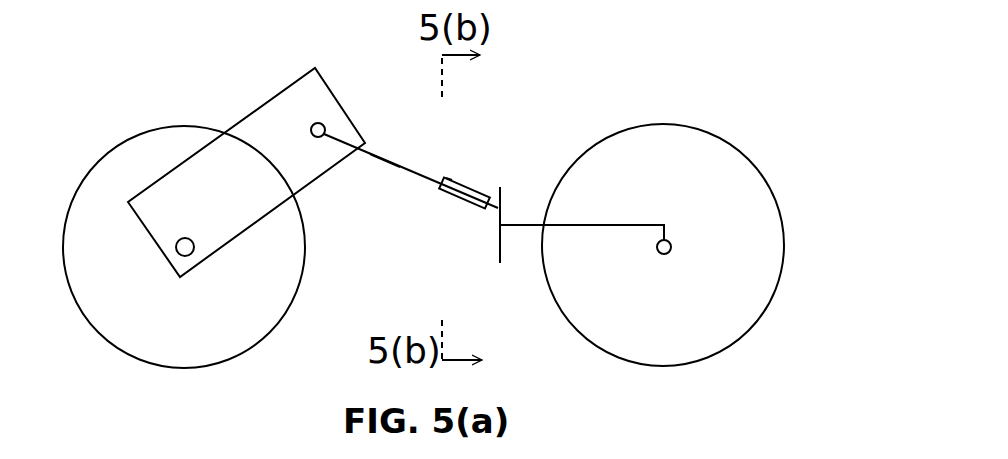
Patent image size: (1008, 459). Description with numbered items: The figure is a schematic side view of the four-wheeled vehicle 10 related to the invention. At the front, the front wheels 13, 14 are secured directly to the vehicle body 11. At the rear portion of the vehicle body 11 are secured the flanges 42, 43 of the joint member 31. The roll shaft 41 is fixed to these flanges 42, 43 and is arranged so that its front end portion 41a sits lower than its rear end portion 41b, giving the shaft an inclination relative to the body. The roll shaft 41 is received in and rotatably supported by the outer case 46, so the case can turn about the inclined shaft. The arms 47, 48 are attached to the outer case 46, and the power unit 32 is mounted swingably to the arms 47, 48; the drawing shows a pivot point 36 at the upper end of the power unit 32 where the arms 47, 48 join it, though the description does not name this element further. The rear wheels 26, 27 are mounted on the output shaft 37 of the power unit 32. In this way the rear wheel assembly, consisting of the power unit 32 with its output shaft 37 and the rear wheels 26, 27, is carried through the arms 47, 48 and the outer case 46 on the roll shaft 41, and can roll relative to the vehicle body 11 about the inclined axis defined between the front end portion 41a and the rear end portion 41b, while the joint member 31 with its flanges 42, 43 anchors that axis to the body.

The four-wheeled vehicle 10 is at (553, 75).
The vehicle body 11 is at (573, 223).
The front wheel 13 is at (675, 209).
The front wheel 14 is at (715, 132).
The rear wheel 26 is at (164, 221).
The rear wheel 27 is at (85, 175).
The joint member 31 is at (428, 172).
The power unit 32 is at (269, 100).
The pivot pin 36 is at (315, 122).
The output shaft 37 is at (194, 249).
The roll shaft 41 is at (494, 190).
The front end portion 41a is at (503, 210).
The rear end portion 41b is at (453, 173).
The flange 42 is at (500, 287).
The flange 43 is at (500, 260).
The outer case 46 is at (452, 188).
The arm 47 is at (365, 205).
The arm 48 is at (382, 160).